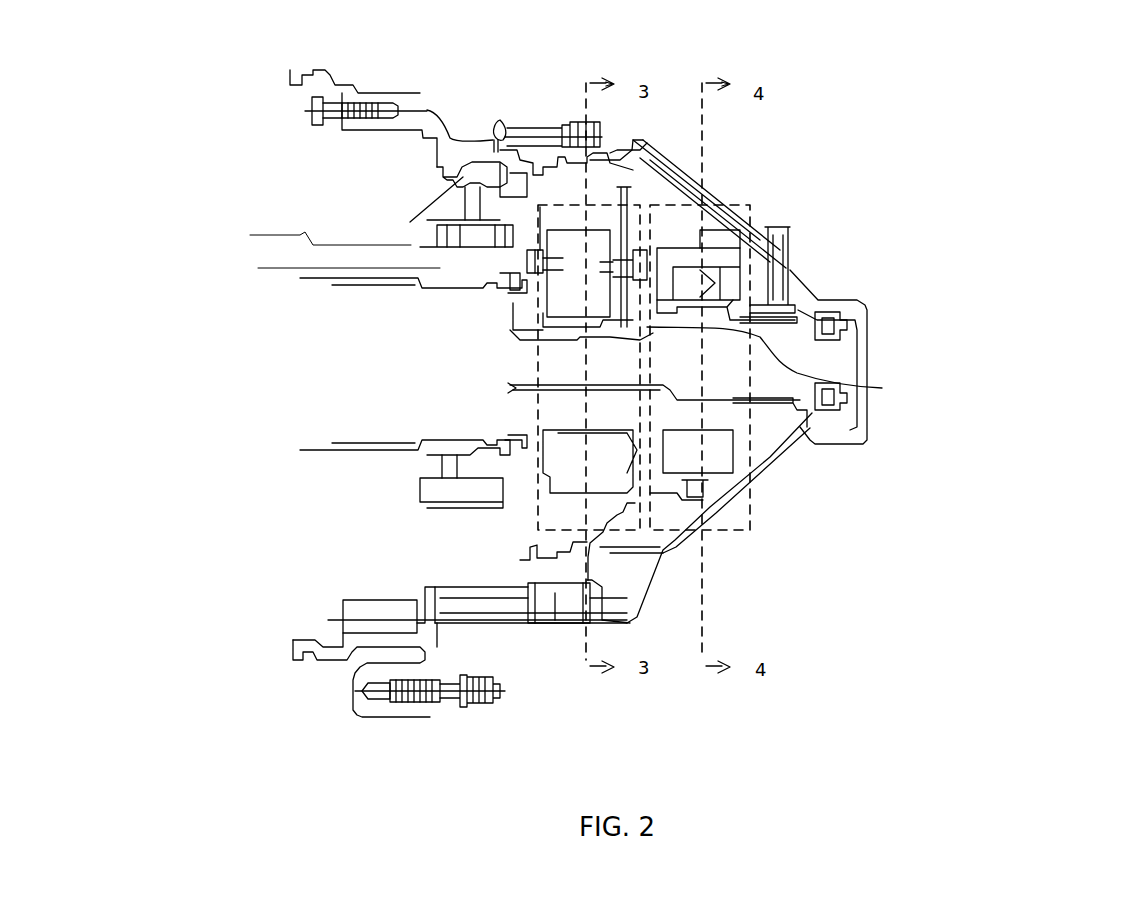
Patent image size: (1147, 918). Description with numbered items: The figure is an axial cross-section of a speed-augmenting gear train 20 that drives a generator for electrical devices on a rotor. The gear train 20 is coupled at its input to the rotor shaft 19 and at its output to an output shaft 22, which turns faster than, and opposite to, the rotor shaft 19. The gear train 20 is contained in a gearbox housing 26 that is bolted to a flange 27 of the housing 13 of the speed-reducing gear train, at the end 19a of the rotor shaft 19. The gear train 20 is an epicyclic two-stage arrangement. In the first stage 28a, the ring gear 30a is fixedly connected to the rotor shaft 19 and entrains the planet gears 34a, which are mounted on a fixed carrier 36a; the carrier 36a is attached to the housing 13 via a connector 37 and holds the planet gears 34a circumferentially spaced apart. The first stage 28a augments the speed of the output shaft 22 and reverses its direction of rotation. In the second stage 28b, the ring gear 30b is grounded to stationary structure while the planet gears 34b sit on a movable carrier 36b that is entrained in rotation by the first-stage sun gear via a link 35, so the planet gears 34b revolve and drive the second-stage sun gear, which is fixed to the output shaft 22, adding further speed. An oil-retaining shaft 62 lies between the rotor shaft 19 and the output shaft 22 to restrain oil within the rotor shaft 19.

The housing 13 is at (492, 138).
The rotor shaft 19 is at (275, 245).
The end of the rotor shaft 19a is at (497, 265).
The speed-augmenting gear train 20 is at (992, 140).
The output shaft 22 is at (520, 347).
The gearbox housing 26 is at (872, 322).
The flange 27 is at (513, 627).
The first stage 28a is at (582, 227).
The second stage 28b is at (709, 186).
The ring gear 30a is at (568, 194).
The ring gear 30b is at (718, 498).
The planet gears 34a is at (571, 492).
The planet gears 34b is at (717, 241).
The link 35 is at (852, 376).
The fixed carrier 36a is at (589, 247).
The movable carrier 36b is at (745, 464).
The connector 37 is at (586, 247).
The oil-retaining shaft 62 is at (355, 278).